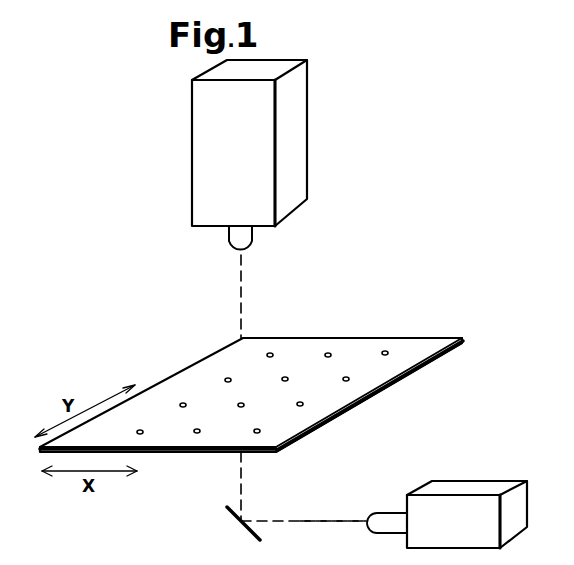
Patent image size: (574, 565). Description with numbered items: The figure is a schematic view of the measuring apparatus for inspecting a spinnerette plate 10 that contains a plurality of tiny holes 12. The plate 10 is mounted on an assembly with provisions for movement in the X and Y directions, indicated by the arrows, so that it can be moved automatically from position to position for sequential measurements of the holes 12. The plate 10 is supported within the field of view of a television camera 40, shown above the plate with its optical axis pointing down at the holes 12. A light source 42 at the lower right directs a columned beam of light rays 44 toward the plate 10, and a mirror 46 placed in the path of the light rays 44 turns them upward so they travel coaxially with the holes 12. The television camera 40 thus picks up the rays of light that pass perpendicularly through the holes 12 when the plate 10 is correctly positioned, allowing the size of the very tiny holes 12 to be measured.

The spinnerette plate 10 is at (415, 340).
The holes 12 is at (382, 352).
The television camera 40 is at (307, 141).
The light source 42 is at (487, 482).
The light rays 44 is at (313, 520).
The mirror 46 is at (228, 513).